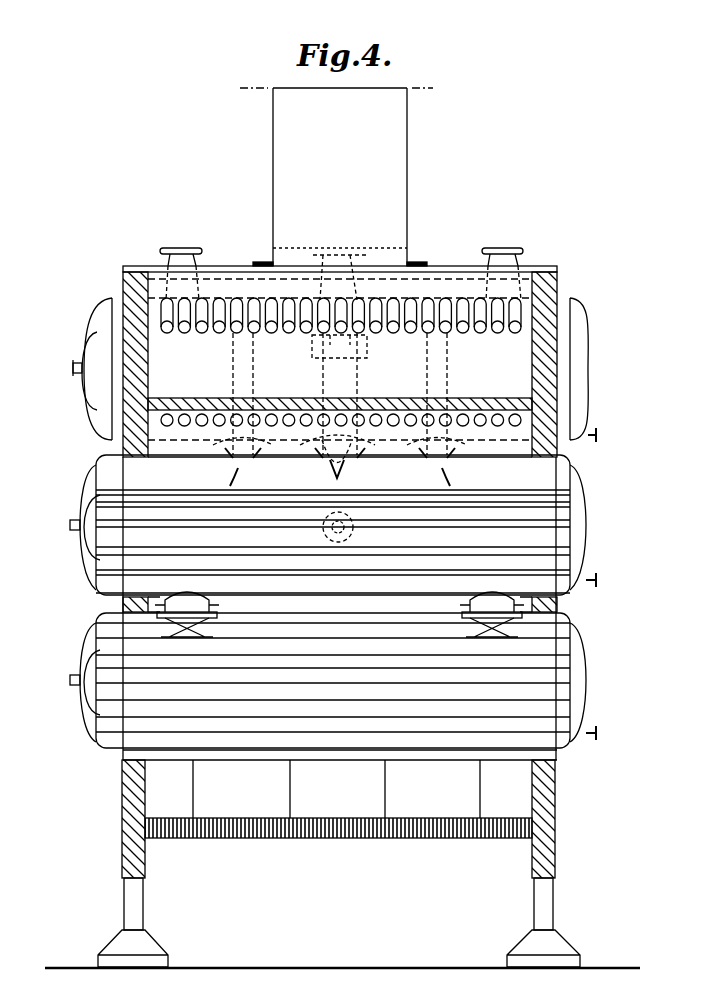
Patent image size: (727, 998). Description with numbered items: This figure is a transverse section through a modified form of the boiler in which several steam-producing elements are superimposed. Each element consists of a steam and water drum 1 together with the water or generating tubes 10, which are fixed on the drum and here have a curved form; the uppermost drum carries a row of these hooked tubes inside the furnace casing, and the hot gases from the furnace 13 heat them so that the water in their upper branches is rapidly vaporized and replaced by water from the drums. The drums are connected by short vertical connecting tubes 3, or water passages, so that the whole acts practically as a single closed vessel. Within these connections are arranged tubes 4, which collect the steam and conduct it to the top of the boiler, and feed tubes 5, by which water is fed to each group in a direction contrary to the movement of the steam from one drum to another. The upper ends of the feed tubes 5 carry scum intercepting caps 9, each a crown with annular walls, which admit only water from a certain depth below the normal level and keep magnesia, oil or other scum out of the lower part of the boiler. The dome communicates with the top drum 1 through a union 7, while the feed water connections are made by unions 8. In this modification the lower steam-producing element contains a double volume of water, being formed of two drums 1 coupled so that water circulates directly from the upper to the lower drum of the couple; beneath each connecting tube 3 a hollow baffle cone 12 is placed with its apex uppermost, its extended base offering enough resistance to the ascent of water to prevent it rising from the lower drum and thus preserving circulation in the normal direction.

The steam and water drum 1 is at (588, 372).
The vertical connecting tube 3 is at (557, 602).
The steam tube 4 is at (233, 372).
The feed tube 5 is at (323, 372).
The union 7 is at (350, 238).
The union 8 is at (172, 252).
The scum intercepting cap 9 is at (312, 348).
The water or generating tube 10 is at (517, 312).
The baffle cone 12 is at (496, 640).
The furnace 13 is at (332, 840).